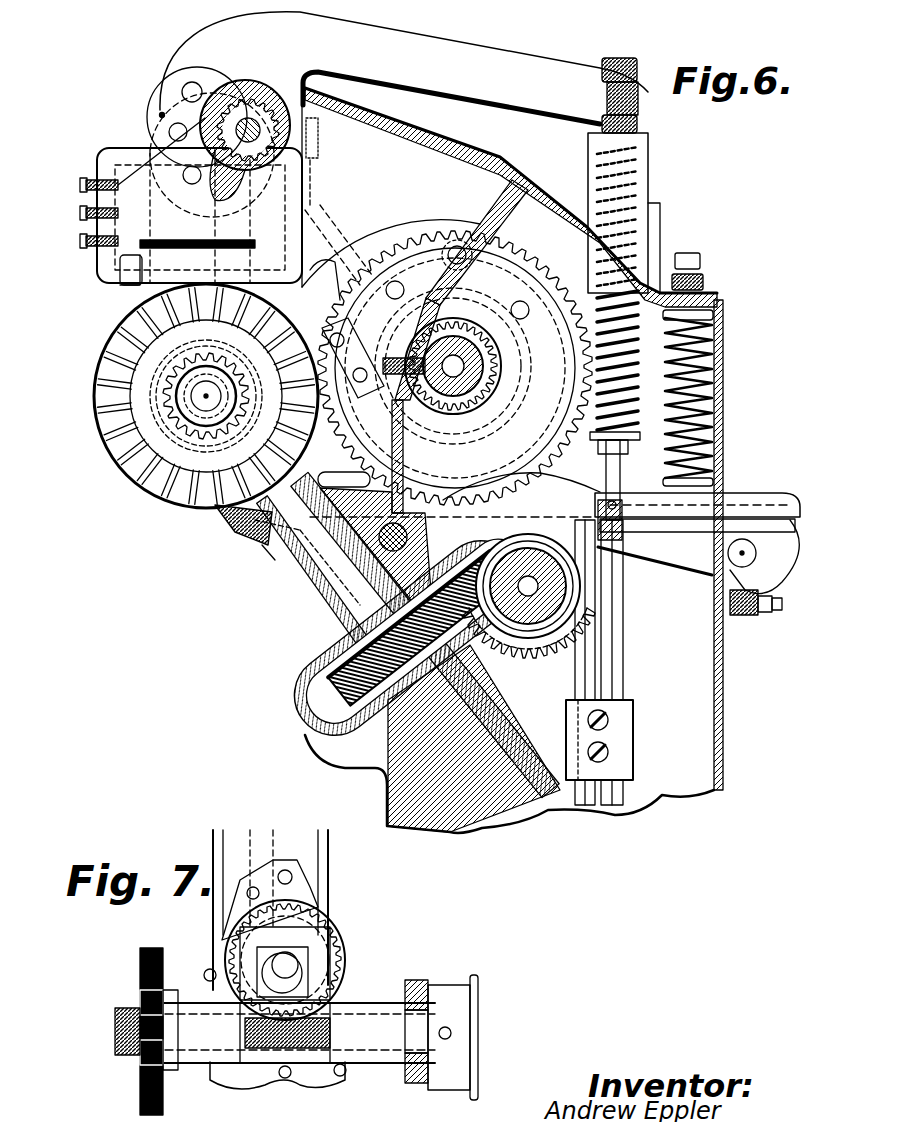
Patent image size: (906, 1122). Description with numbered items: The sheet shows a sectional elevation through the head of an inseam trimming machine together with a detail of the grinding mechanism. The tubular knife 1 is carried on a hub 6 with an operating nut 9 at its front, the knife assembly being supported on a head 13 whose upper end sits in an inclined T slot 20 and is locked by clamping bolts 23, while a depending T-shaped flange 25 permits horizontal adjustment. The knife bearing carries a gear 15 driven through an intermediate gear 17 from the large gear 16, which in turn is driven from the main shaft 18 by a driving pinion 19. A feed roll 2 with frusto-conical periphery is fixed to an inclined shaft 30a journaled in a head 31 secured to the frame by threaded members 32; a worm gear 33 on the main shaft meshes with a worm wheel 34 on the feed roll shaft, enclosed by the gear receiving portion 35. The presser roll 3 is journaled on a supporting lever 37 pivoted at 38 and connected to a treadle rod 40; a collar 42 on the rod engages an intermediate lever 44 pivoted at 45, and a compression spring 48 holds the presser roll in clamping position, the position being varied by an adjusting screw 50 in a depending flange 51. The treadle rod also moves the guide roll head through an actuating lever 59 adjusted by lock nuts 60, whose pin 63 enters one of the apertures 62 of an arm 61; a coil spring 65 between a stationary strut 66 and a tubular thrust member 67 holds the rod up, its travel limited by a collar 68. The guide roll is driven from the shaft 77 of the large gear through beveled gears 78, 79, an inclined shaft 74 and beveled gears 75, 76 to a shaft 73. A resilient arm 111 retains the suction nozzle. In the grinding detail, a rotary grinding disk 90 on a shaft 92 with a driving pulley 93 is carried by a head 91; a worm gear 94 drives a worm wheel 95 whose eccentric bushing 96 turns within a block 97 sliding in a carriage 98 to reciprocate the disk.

In FIG. 6, the actuating lever 59 is at (441, 55).
In FIG. 6, the lock nuts 60 is at (625, 70).
In FIG. 6, the tubular thrust member 67 is at (640, 175).
In FIG. 6, the pin 63 is at (195, 88).
In FIG. 6, the beveled gear 75 is at (295, 100).
In FIG. 6, the apertures 62 is at (185, 90).
In FIG. 6, the arm 61 is at (160, 115).
In FIG. 6, the clamping bolts 23 is at (92, 190).
In FIG. 6, the inclined T slot 20 is at (125, 268).
In FIG. 6, the T-shaped flange 25 is at (150, 305).
In FIG. 6, the head 13 is at (165, 343).
In FIG. 6, the tubular knife 1 is at (110, 364).
In FIG. 6, the hub 6 is at (140, 397).
In FIG. 6, the operating nut 9 is at (207, 380).
In FIG. 6, the gear 15 is at (135, 468).
In FIG. 6, the feed roll 2 is at (225, 518).
In FIG. 6, the presser roll 3 is at (262, 547).
In FIG. 6, the intermediate gear 17 is at (312, 270).
In FIG. 6, the resilient arm 111 is at (362, 390).
In FIG. 6, the large gear 16 is at (510, 248).
In FIG. 6, the beveled gear 78 is at (440, 300).
In FIG. 6, the beveled gear 79 is at (501, 352).
In FIG. 6, the shaft 77 is at (456, 390).
In FIG. 6, the coil spring 65 is at (596, 365).
In FIG. 6, the stationary strut 66 is at (600, 420).
In FIG. 6, the collar 68 is at (625, 443).
In FIG. 6, the shaft 73 is at (318, 130).
In FIG. 6, the beveled gear 76 is at (315, 162).
In FIG. 6, the inclined shaft 74 is at (337, 230).
In FIG. 6, the compression spring 48 is at (723, 392).
In FIG. 6, the supporting lever 37 is at (748, 502).
In FIG. 6, the collar 42 is at (628, 520).
In FIG. 6, the intermediate lever 44 is at (682, 560).
In FIG. 6, the pivot 45 is at (745, 556).
In FIG. 6, the adjusting screw 50 is at (768, 614).
In FIG. 6, the depending flange 51 is at (744, 616).
In FIG. 6, the main shaft 18 is at (540, 590).
In FIG. 6, the worm gear 33 is at (535, 660).
In FIG. 6, the driving pinion 19 is at (532, 662).
In FIG. 6, the treadle rod 40 is at (612, 685).
In FIG. 6, the pivot 38 is at (333, 578).
In FIG. 6, the inclined shaft 30a is at (358, 610).
In FIG. 6, the head 31 is at (350, 645).
In FIG. 6, the gear receiving portion 35 is at (310, 727).
In FIG. 6, the worm wheel 34 is at (342, 727).
In FIG. 6, the threaded members 32 is at (389, 790).
In FIG. 7, the head 91 is at (332, 890).
In FIG. 7, the block 97 is at (262, 952).
In FIG. 7, the rotary grinding disk 90 is at (150, 958).
In FIG. 7, the worm wheel 95 is at (340, 955).
In FIG. 7, the eccentric bushing 96 is at (297, 980).
In FIG. 7, the driving pulley 93 is at (450, 998).
In FIG. 7, the carriage 98 is at (248, 1050).
In FIG. 7, the worm gear 94 is at (310, 1050).
In FIG. 7, the shaft 92 is at (412, 1075).